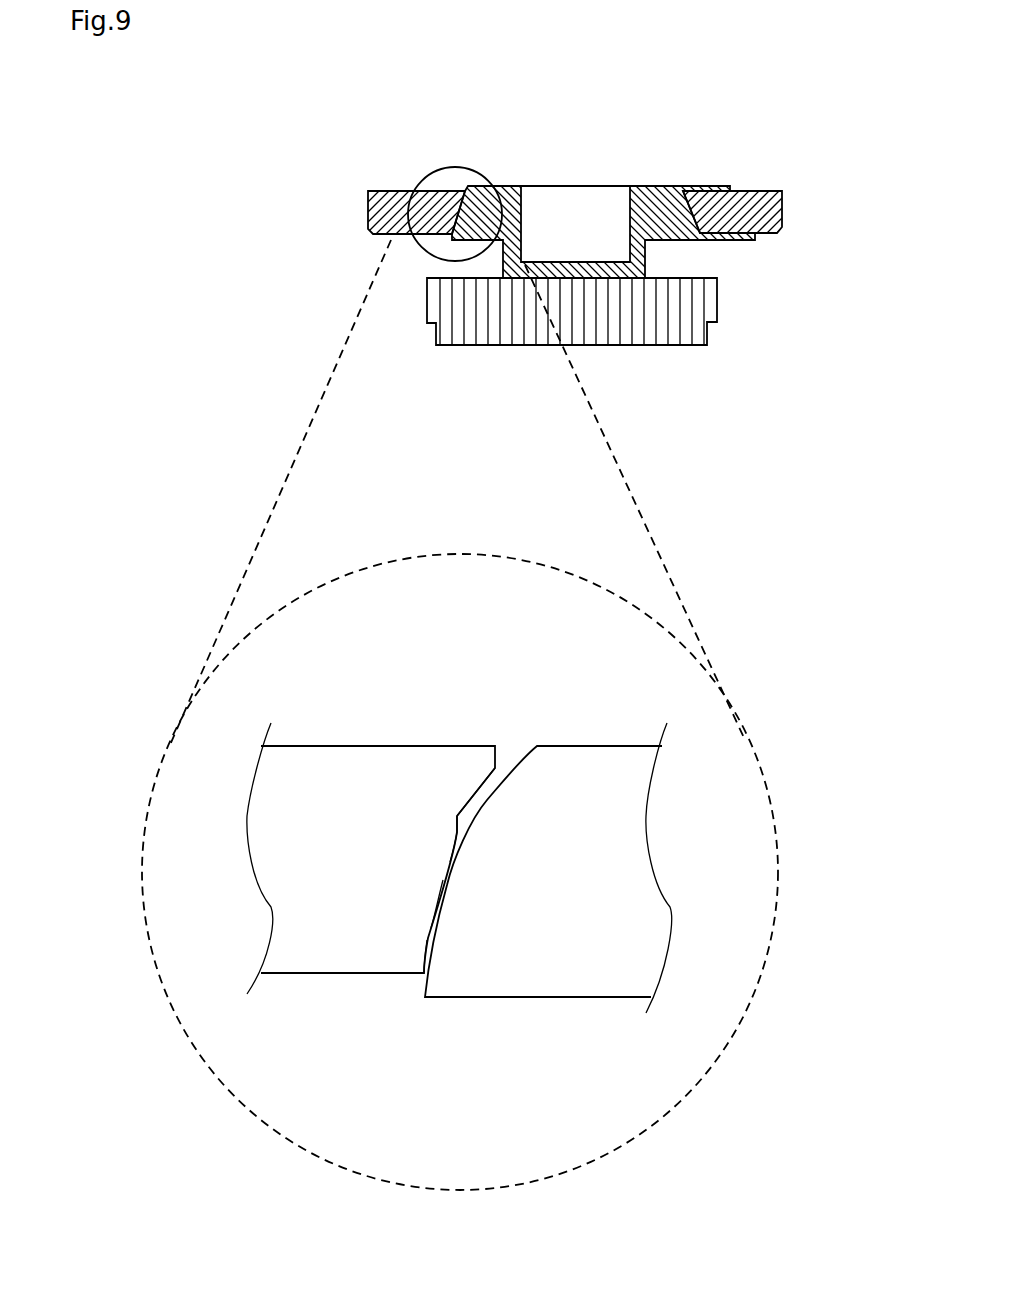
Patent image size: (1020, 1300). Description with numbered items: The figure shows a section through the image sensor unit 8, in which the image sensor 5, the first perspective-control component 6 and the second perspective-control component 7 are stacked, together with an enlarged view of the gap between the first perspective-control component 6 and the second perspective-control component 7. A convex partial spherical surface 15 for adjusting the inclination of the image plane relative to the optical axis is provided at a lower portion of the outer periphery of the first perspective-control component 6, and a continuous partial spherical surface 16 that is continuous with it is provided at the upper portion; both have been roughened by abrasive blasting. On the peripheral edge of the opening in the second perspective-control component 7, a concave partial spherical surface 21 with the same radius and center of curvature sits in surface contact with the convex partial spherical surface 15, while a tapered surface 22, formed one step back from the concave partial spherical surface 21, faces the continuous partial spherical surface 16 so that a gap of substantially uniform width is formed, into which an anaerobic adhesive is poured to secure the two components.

The image sensor 5 is at (717, 307).
The first perspective-control component 6 is at (657, 186).
The second perspective-control component 7 is at (387, 191).
The image sensor unit 8 is at (774, 150).
The convex partial spherical surface 15 is at (425, 950).
The continuous partial spherical surface 16 is at (480, 790).
The concave partial spherical surface 21 is at (448, 910).
The tapered surface 22 is at (473, 830).